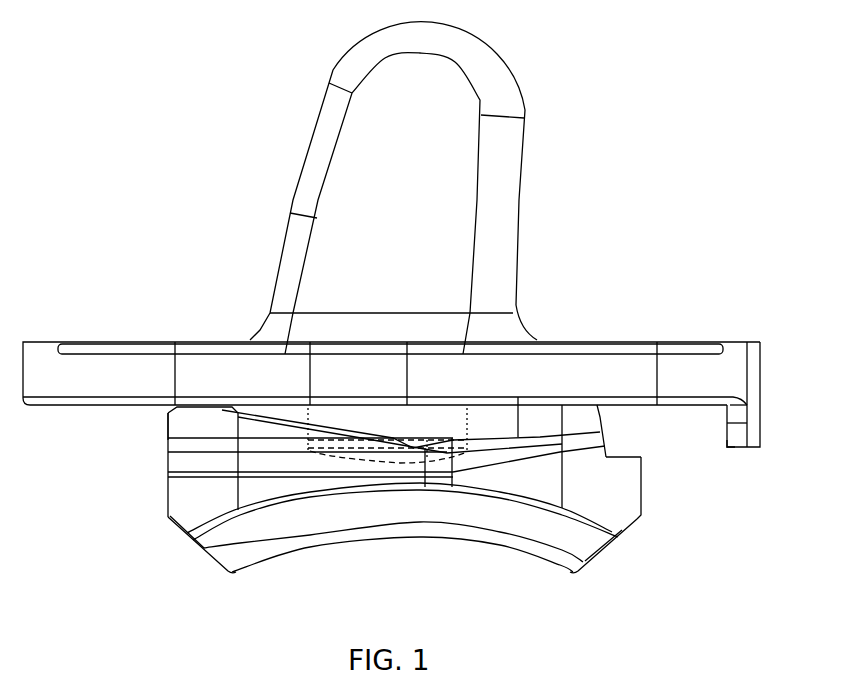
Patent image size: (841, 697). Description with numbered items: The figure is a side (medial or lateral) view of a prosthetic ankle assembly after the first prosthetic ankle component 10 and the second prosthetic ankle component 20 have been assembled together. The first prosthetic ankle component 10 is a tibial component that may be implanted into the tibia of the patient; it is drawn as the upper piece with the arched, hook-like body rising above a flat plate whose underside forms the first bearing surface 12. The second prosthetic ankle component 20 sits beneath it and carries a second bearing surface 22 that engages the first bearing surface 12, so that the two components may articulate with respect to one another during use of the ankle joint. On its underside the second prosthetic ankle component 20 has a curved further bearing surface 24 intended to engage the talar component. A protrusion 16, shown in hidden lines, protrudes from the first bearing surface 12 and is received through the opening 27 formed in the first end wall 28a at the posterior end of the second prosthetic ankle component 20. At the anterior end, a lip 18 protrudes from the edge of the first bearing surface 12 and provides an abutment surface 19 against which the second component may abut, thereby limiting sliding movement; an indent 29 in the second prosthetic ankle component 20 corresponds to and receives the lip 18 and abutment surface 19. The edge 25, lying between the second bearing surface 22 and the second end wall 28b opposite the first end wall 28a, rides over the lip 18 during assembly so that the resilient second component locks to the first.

The first prosthetic ankle component 10 is at (443, 220).
The first bearing surface 12 is at (510, 405).
The protrusion 16 is at (345, 418).
The lip 18 is at (745, 424).
The abutment surface 19 is at (728, 442).
The second prosthetic ankle component 20 is at (630, 500).
The second bearing surface 22 is at (538, 408).
The further bearing surface 24 is at (530, 556).
The edge 25 is at (603, 407).
The opening 27 is at (168, 421).
The first end wall 28a is at (168, 443).
The second end wall 28b is at (600, 432).
The indent 29 is at (627, 457).